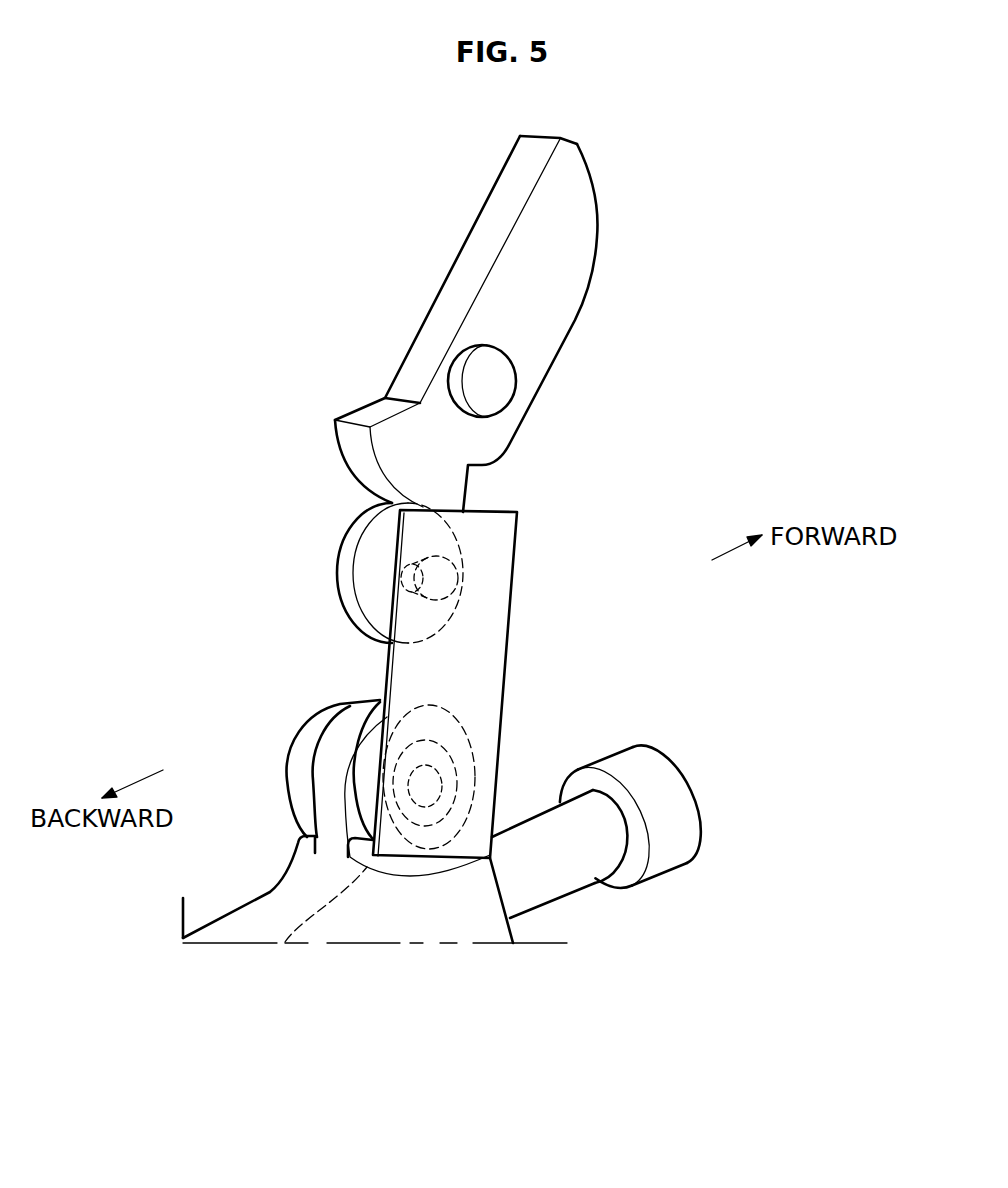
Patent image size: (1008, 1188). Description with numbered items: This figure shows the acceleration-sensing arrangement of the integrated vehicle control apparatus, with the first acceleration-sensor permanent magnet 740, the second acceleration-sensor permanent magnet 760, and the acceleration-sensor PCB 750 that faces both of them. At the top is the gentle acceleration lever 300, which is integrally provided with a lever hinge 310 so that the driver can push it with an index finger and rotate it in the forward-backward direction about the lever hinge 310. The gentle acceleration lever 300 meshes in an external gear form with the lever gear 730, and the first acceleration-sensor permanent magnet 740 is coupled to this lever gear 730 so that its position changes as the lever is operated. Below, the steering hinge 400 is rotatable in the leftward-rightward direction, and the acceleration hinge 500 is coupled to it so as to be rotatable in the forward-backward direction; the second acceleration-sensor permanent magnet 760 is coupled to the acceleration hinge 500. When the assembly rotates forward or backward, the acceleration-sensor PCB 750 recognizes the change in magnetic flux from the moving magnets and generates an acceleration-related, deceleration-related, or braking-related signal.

The gentle acceleration lever 300 is at (573, 289).
The lever hinge 310 is at (497, 382).
The steering hinge 400 is at (407, 915).
The acceleration hinge 500 is at (310, 733).
The lever gear 730 is at (348, 567).
The first acceleration-sensor permanent magnet 740 is at (440, 580).
The acceleration-sensor PCB 750 is at (483, 670).
The second acceleration-sensor permanent magnet 760 is at (440, 788).